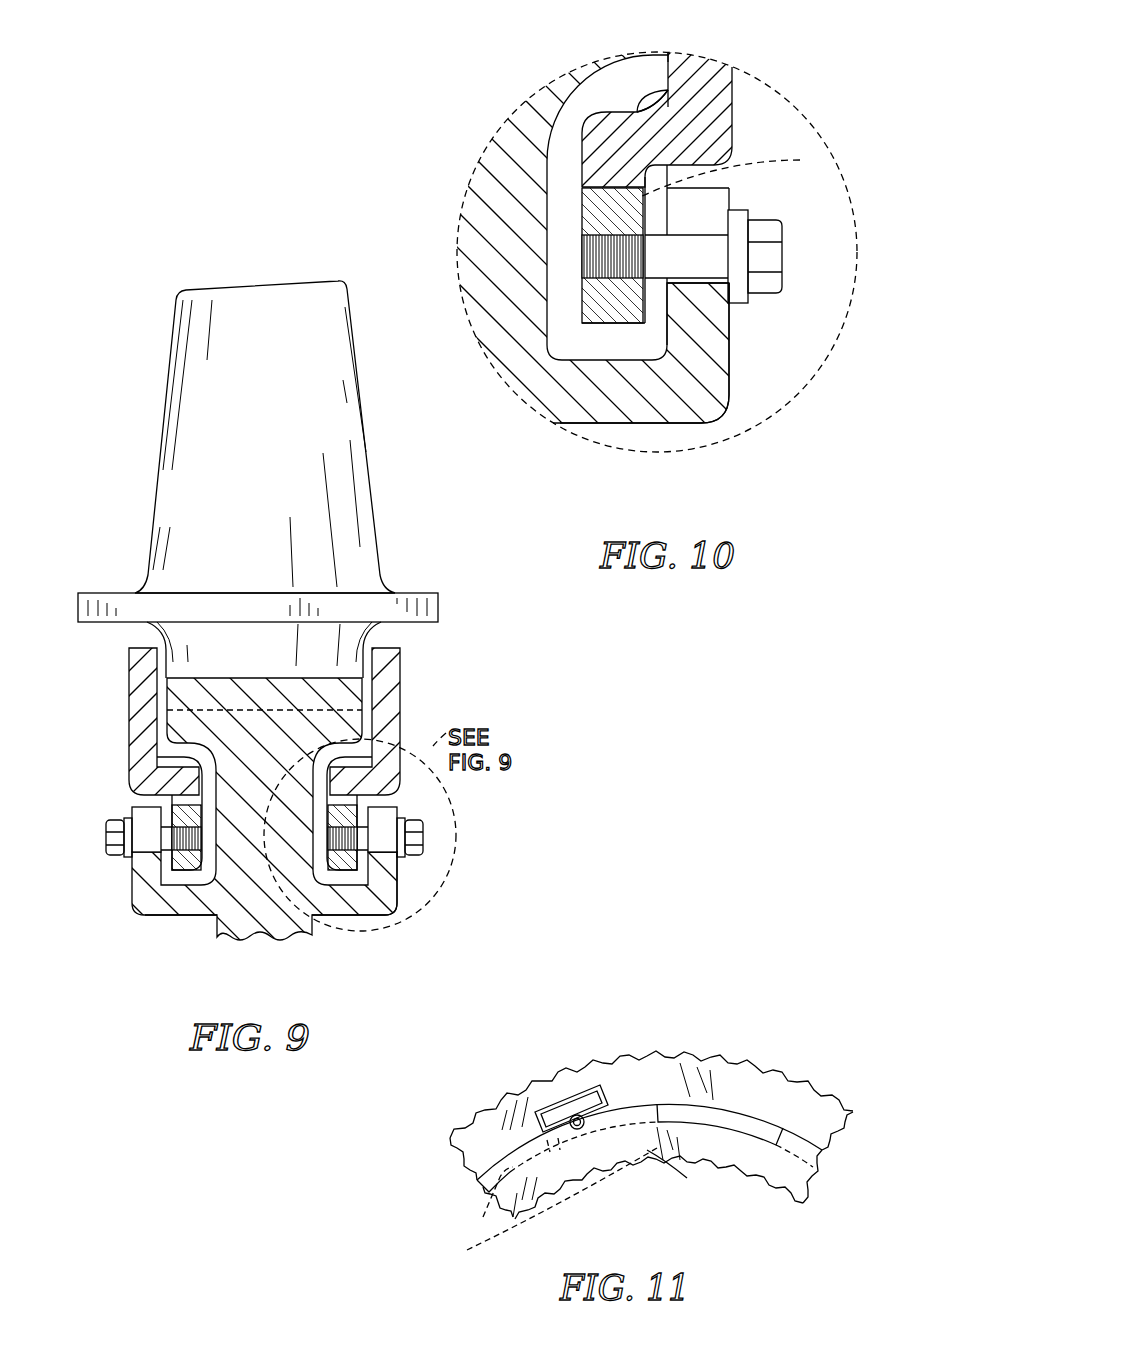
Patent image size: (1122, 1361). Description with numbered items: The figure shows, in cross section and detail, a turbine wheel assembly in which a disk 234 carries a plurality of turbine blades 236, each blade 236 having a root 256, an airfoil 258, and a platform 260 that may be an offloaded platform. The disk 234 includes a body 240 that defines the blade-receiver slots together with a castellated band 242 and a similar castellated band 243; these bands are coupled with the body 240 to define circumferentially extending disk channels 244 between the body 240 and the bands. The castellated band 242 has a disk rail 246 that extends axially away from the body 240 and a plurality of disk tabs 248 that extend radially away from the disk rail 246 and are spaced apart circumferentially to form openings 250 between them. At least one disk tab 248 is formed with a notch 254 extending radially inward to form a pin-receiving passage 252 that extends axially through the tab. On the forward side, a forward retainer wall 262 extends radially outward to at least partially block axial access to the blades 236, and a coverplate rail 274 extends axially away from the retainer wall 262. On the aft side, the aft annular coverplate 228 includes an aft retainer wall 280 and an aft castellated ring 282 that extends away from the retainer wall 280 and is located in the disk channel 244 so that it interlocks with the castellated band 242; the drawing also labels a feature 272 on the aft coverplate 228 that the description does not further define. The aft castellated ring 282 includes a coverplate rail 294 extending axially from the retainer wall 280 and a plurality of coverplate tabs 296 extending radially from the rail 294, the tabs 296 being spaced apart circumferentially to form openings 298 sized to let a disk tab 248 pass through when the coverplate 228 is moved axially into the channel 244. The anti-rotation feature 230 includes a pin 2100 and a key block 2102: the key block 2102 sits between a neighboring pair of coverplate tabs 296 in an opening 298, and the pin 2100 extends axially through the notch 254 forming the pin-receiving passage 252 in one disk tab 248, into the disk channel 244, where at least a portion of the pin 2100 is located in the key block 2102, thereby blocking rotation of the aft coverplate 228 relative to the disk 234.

In FIG. 9, the aft annular coverplate 228 is at (428, 679).
In FIG. 10, the aft annular coverplate 228 is at (758, 136).
In FIG. 11, the aft annular coverplate 228 is at (822, 1067).
In FIG. 9, the anti-rotation feature 230 is at (533, 896).
In FIG. 10, the disk 234 is at (607, 435).
In FIG. 11, the disk 234 is at (770, 1206).
In FIG. 9, the turbine blade 236 is at (60, 422).
In FIG. 9, the body 240 is at (166, 733).
In FIG. 9, the castellated band 242 is at (197, 928).
In FIG. 9, the castellated band 243 is at (334, 930).
In FIG. 10, the castellated band 243 is at (818, 468).
In FIG. 11, the castellated band 243 is at (824, 1206).
In FIG. 10, the disk channel 244 is at (598, 343).
In FIG. 9, the disk rail 246 is at (181, 916).
In FIG. 10, the disk rail 246 is at (637, 425).
In FIG. 10, the disk tab 248 is at (730, 362).
In FIG. 11, the disk tab 248 is at (733, 1118).
In FIG. 11, the opening 250 is at (736, 1120).
In FIG. 10, the pin-receiving passage 252 is at (698, 214).
In FIG. 10, the notch 254 is at (715, 290).
In FIG. 11, the notch 254 is at (520, 1150).
In FIG. 9, the root 256 is at (153, 703).
In FIG. 9, the airfoil 258 is at (168, 368).
In FIG. 9, the platform 260 is at (110, 594).
In FIG. 9, the forward retainer wall 262 is at (128, 757).
In FIG. 10, the corner 272 is at (733, 80).
In FIG. 9, the coverplate rail 274 is at (135, 790).
In FIG. 9, the aft retainer wall 280 is at (400, 718).
In FIG. 10, the aft castellated ring 282 is at (899, 136).
In FIG. 11, the aft castellated ring 282 is at (852, 1140).
In FIG. 9, the coverplate rail 294 is at (365, 760).
In FIG. 10, the coverplate rail 294 is at (733, 80).
In FIG. 10, the coverplate tab 296 is at (800, 160).
In FIG. 11, the coverplate tab 296 is at (483, 1217).
In FIG. 11, the opening 298 is at (530, 1088).
In FIG. 9, the pin 2100 is at (98, 837).
In FIG. 10, the pin 2100 is at (790, 262).
In FIG. 11, the pin 2100 is at (585, 1118).
In FIG. 9, the key block 2102 is at (161, 858).
In FIG. 10, the key block 2102 is at (582, 303).
In FIG. 11, the key block 2102 is at (578, 1113).